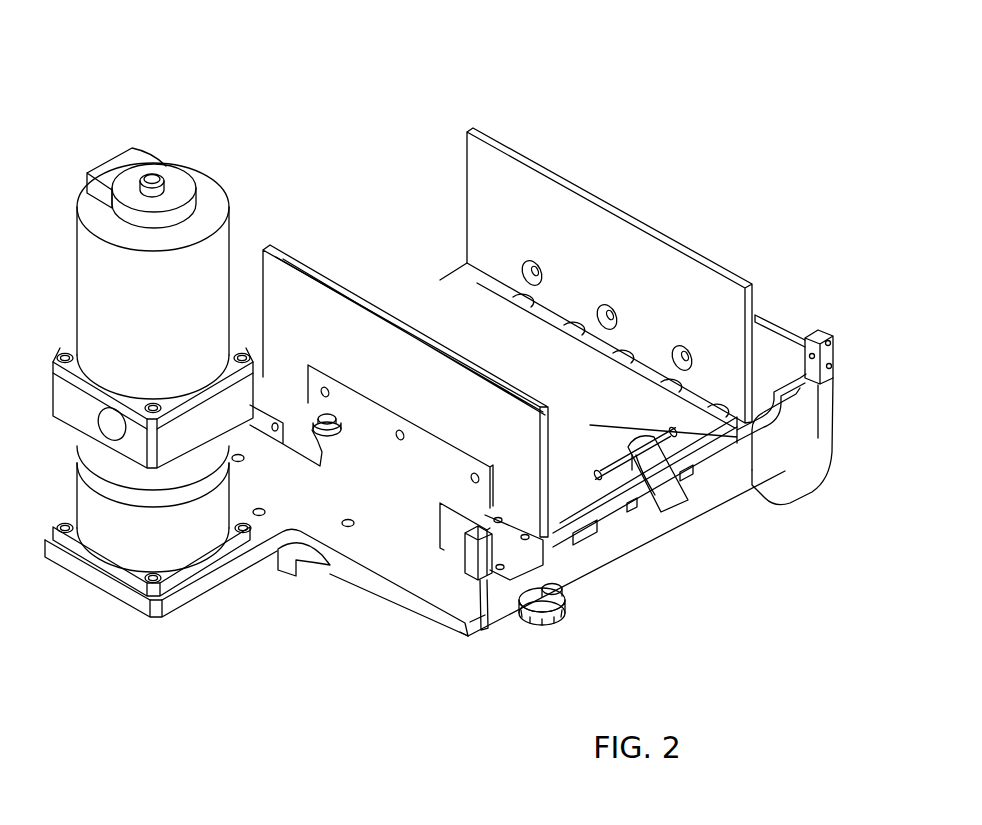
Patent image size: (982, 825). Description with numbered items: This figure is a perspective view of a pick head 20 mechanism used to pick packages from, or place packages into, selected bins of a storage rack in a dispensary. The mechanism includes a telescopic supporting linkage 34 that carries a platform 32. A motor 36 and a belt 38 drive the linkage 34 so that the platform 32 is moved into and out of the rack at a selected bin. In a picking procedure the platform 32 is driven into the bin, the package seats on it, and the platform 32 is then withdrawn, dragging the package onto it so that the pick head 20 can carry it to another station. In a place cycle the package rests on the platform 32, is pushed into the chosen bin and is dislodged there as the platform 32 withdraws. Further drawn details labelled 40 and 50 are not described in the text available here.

The pick head 20 is at (463, 333).
The platform 32 is at (605, 390).
The telescopic supporting linkage 34 is at (627, 510).
The motor 36 is at (208, 197).
The belt 38 is at (540, 613).
The pusher rod with strap 40 is at (670, 492).
The mounting holes 50 is at (685, 356).